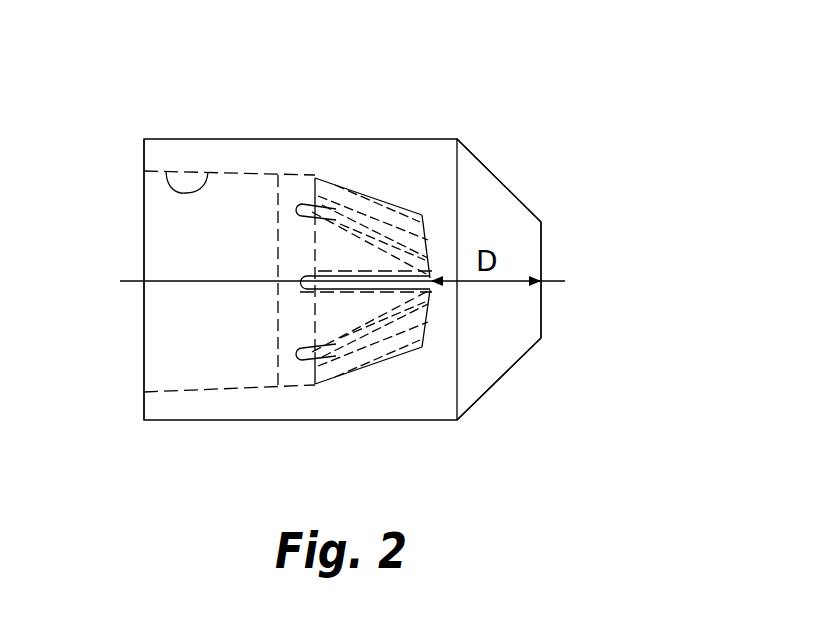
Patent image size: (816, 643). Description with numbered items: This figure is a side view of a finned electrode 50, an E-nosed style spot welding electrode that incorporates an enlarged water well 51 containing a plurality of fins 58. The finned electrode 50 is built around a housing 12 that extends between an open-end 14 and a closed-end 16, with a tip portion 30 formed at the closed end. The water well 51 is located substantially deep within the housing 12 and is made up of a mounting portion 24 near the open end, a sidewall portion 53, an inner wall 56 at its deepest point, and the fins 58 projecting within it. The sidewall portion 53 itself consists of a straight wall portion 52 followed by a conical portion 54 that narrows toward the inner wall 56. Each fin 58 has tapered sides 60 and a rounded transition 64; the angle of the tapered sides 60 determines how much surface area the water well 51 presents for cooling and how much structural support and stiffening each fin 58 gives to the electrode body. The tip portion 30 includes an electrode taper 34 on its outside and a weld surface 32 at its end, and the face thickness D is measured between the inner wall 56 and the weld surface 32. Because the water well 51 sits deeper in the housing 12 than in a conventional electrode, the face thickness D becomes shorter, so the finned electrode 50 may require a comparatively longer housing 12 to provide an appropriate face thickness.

The housing 12 is at (256, 139).
The open-end 14 is at (144, 327).
The closed-end 16 is at (542, 305).
The mounting portion 24 is at (167, 170).
The tip portion 30 is at (500, 212).
The weld surface 32 is at (542, 248).
The electrode taper 34 is at (500, 378).
The finned electrode 50 is at (576, 79).
The water well 51 is at (216, 320).
The straight wall portion 52 is at (292, 375).
The sidewall portion 53 is at (322, 282).
The conical portion 54 is at (392, 363).
The inner wall 56 is at (428, 233).
The fins 58 is at (346, 262).
The tapered sides 60 is at (384, 270).
The rounded transition 64 is at (303, 284).